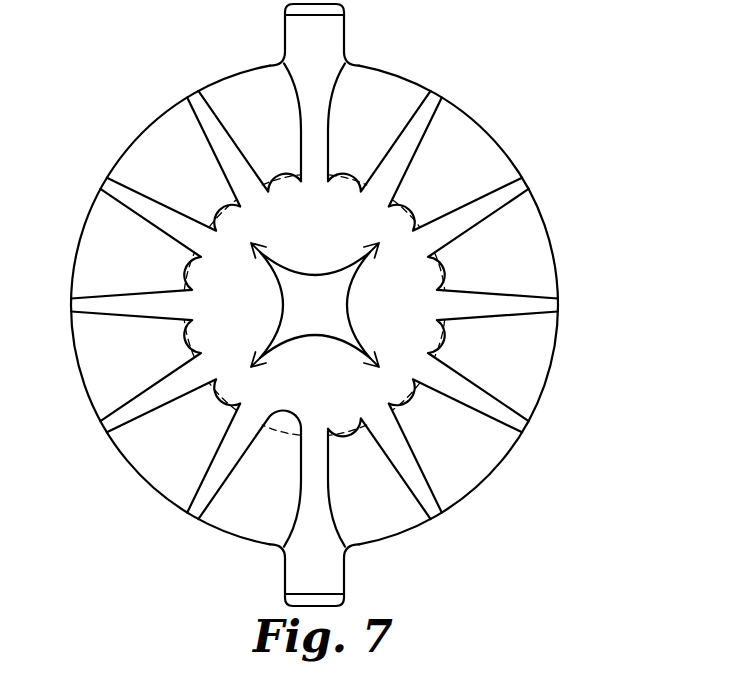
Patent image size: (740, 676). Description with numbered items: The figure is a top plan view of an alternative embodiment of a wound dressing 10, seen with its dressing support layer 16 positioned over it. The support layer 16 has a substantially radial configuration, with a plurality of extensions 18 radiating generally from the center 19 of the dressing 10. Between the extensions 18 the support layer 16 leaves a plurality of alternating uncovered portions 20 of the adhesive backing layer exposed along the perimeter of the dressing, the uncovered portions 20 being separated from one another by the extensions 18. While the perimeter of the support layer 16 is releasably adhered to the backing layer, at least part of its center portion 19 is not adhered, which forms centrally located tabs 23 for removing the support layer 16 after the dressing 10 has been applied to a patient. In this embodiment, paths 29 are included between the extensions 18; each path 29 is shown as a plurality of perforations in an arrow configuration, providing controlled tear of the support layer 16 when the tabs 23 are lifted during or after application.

The wound dressing 10 is at (343, 305).
The dressing support layer 16 is at (330, 40).
The extensions 18 is at (518, 192).
The center 19 is at (335, 315).
The uncovered portions 20 is at (540, 246).
The tabs 23 is at (333, 242).
The paths 29 is at (381, 364).